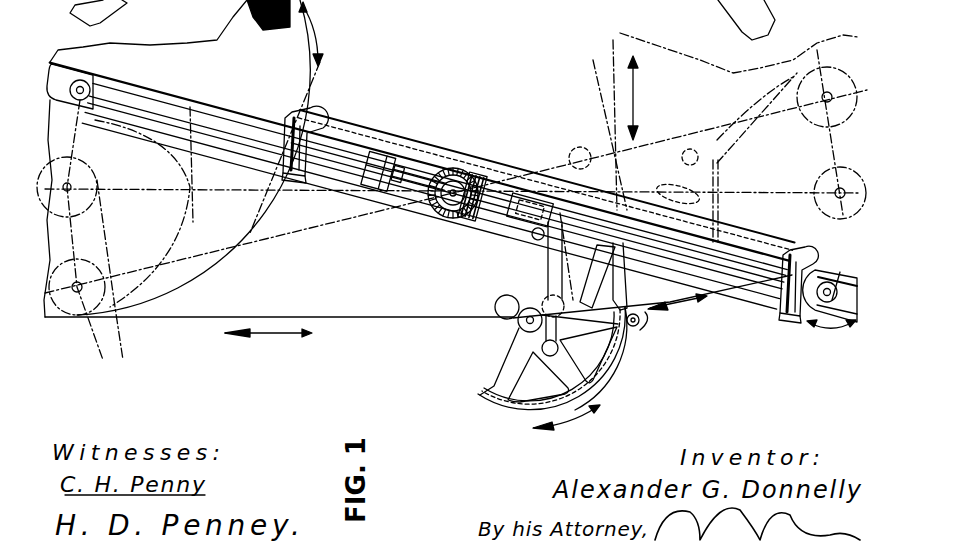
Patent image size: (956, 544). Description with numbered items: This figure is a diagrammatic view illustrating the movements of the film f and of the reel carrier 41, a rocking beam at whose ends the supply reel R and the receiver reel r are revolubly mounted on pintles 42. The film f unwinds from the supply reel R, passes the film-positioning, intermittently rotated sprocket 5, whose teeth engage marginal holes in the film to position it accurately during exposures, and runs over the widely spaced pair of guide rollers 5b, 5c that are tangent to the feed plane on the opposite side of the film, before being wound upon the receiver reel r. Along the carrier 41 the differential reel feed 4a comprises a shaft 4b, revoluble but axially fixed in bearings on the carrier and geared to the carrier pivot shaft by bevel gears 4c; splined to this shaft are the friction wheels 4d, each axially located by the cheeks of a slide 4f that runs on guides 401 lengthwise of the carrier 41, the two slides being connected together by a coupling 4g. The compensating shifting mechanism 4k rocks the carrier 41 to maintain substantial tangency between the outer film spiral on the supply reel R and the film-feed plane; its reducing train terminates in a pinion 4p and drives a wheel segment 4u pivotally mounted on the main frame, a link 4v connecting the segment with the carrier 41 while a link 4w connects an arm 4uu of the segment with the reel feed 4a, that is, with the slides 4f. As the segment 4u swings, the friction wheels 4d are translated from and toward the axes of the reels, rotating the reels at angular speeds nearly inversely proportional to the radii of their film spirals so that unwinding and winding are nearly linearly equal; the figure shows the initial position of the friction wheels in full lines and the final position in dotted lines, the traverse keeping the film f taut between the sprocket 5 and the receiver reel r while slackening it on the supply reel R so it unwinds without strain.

The pintle 42 is at (80, 80).
The guides 401 is at (204, 105).
The slide 4f is at (300, 108).
The friction wheel 4d is at (306, 180).
The coupling 4g is at (397, 133).
The reel carrier 41 is at (398, 205).
The reel feed 4a is at (440, 213).
The bevel gears 4c is at (450, 168).
The shaft 4b is at (497, 195).
The link 4v is at (548, 270).
The shifting mechanism 4k is at (545, 290).
The guide roller 5b is at (496, 308).
The sprocket 5 is at (522, 325).
The guide roller 5c is at (588, 308).
The wheel segment 4u is at (615, 353).
The arm 4uu is at (610, 250).
The link 4w is at (647, 258).
The pinion 4p is at (637, 326).
The film f is at (350, 314).
The receiver reel r is at (840, 272).
The supply reel R is at (235, 69).